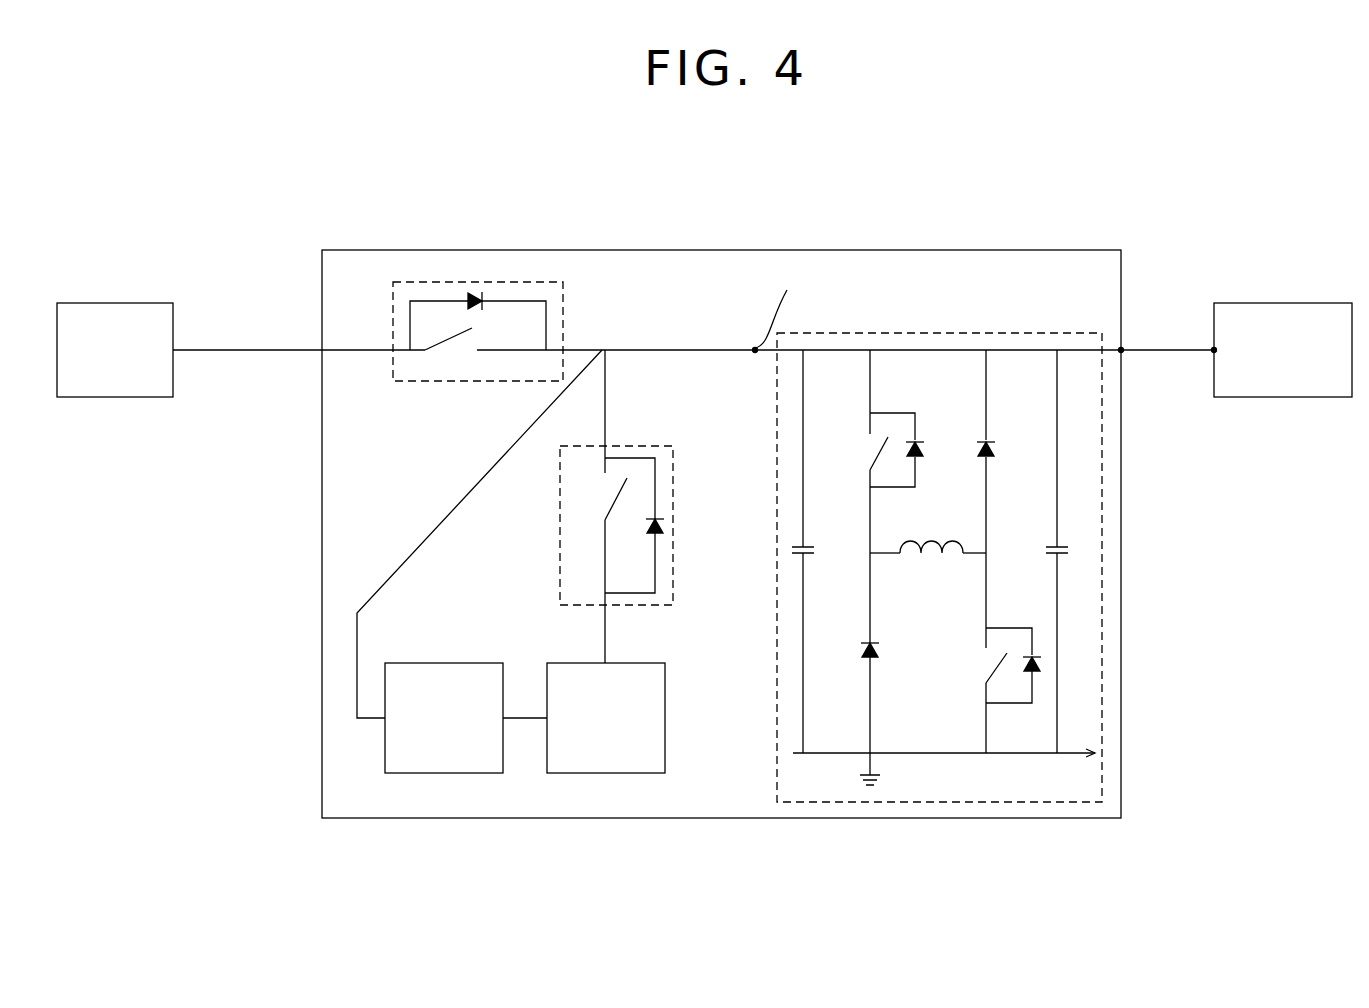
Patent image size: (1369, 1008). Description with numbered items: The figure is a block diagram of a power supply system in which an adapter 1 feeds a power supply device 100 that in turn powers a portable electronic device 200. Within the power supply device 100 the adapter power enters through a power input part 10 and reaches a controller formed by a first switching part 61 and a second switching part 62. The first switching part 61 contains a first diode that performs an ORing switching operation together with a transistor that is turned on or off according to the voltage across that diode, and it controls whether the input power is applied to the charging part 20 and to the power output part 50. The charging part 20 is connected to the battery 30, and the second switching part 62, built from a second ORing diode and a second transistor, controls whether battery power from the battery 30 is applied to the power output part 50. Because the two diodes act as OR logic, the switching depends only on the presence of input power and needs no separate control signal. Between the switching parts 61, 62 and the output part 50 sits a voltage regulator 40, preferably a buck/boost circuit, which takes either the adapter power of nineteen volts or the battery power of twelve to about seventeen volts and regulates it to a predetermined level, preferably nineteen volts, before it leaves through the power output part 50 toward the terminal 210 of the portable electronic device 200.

The adapter 1 is at (113, 303).
The power input part 10 is at (320, 352).
The power supply device 100 is at (352, 250).
The first switching part 61 is at (477, 282).
The second switching part 62 is at (675, 524).
The charging part 20 is at (447, 773).
The battery 30 is at (607, 773).
The voltage regulator 40 is at (938, 333).
The power output part 50 is at (1121, 350).
The portable electronic device 200 is at (1282, 303).
The electronic device input terminal 210 is at (1214, 352).